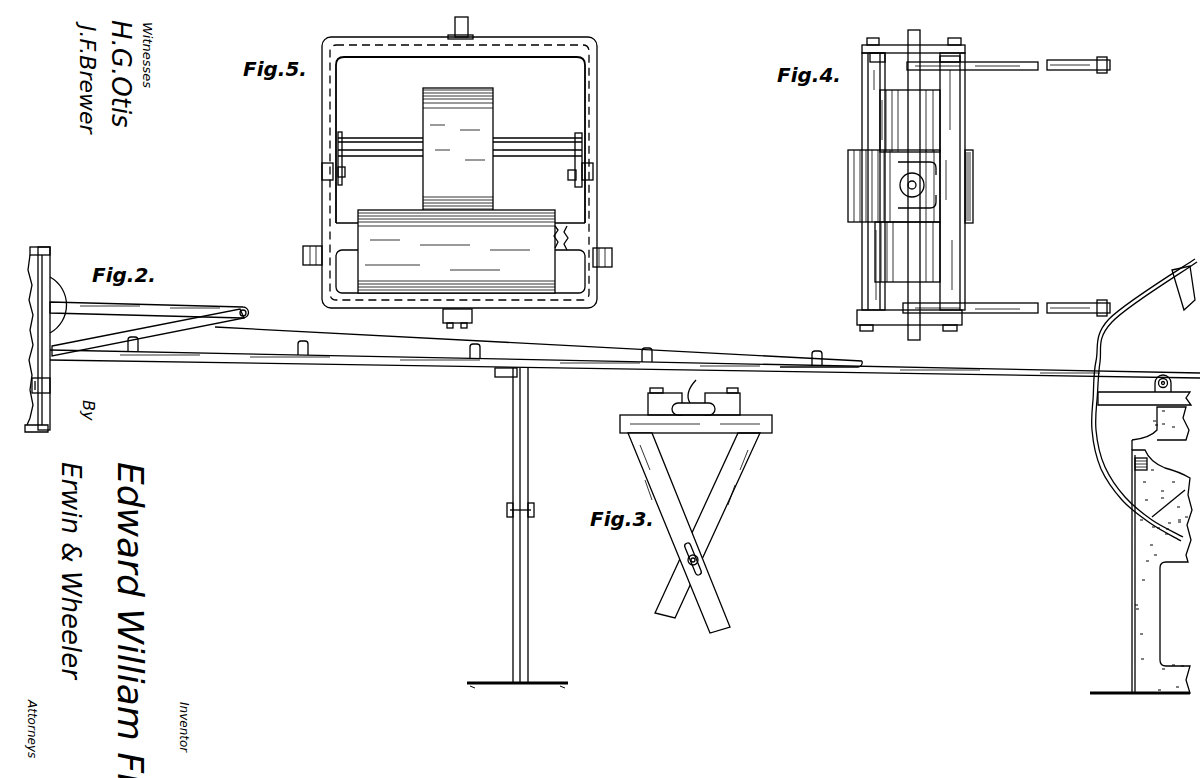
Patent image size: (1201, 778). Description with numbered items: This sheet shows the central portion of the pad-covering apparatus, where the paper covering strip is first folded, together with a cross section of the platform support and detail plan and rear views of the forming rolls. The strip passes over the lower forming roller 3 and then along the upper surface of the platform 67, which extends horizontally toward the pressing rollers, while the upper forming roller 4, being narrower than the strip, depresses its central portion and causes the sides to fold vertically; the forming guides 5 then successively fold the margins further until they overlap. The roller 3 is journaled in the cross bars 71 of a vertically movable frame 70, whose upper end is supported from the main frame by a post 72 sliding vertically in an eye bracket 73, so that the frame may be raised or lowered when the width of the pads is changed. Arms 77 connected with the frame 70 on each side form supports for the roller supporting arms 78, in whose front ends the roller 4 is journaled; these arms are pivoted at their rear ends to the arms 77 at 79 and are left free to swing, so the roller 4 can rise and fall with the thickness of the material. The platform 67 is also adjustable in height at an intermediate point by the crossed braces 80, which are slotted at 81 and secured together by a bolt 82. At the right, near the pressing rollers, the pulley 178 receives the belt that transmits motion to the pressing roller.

In FIG. 2, the forming roller 3 is at (50, 386).
In FIG. 4, the forming roller 3 is at (885, 112).
In FIG. 5, the forming roller 3 is at (514, 216).
In FIG. 2, the forming roller 4 is at (64, 290).
In FIG. 4, the forming roller 4 is at (858, 183).
In FIG. 5, the forming roller 4 is at (495, 110).
In FIG. 2, the forming guides 5 is at (137, 345).
In FIG. 2, the platform 67 is at (1072, 373).
In FIG. 2, the vertically movable frame 70 is at (50, 252).
In FIG. 4, the vertically movable frame 70 is at (960, 257).
In FIG. 5, the vertically movable frame 70 is at (585, 78).
In FIG. 2, the cross bars 71 is at (50, 401).
In FIG. 4, the cross bars 71 is at (900, 46).
In FIG. 5, the cross bars 71 is at (318, 267).
In FIG. 4, the post 72 is at (915, 170).
In FIG. 5, the post 72 is at (469, 22).
In FIG. 4, the eye bracket 73 is at (912, 197).
In FIG. 2, the arms 77 is at (213, 313).
In FIG. 4, the arms 77 is at (1073, 61).
In FIG. 5, the arms 77 is at (325, 164).
In FIG. 2, the roller supporting arms 78 is at (172, 300).
In FIG. 4, the roller supporting arms 78 is at (1006, 70).
In FIG. 5, the roller supporting arms 78 is at (342, 138).
In FIG. 2, the pivot 79 is at (249, 312).
In FIG. 4, the pivot 79 is at (1100, 73).
In FIG. 5, the pivot 79 is at (345, 172).
In FIG. 2, the crossed braces 80 is at (520, 479).
In FIG. 3, the crossed braces 80 is at (720, 484).
In FIG. 3, the slot 81 is at (699, 563).
In FIG. 2, the bolt 82 is at (534, 510).
In FIG. 3, the bolt 82 is at (701, 557).
In FIG. 2, the pulley 178 is at (1095, 445).